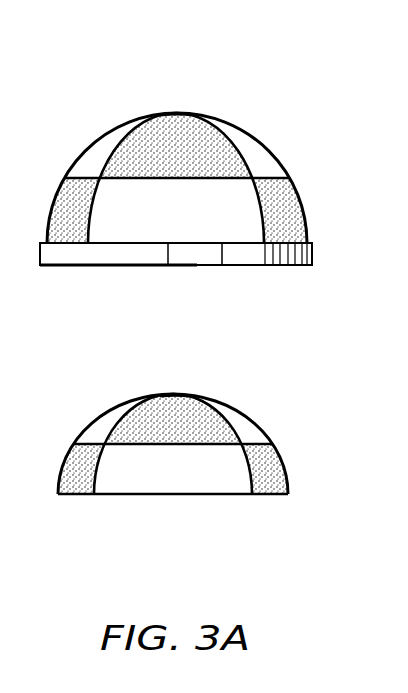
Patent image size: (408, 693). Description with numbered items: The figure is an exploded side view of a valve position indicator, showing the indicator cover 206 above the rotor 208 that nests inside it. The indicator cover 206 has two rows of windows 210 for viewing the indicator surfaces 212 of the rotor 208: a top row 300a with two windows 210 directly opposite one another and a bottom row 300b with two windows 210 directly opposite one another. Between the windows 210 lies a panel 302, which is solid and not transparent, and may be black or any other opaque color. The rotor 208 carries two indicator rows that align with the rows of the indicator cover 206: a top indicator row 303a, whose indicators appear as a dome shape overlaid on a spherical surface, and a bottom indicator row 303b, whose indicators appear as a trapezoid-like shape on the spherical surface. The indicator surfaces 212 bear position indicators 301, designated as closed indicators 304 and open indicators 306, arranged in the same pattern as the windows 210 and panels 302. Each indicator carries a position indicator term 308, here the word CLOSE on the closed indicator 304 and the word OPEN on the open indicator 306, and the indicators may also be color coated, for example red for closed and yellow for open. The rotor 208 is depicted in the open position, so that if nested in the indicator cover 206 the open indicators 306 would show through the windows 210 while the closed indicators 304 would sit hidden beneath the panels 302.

The indicator cover 206 is at (191, 97).
The rotor 208 is at (219, 394).
The window 210 is at (107, 133).
The indicator surface 212 is at (66, 464).
The top row 300a is at (266, 131).
The bottom row 300b is at (299, 185).
The position indicator 301 is at (104, 509).
The panel 302 is at (167, 113).
The top indicator row 303a is at (273, 410).
The bottom indicator row 303b is at (296, 460).
The closed indicator 304 is at (177, 393).
The open indicator 306 is at (97, 417).
The position indicator term 308 is at (153, 509).